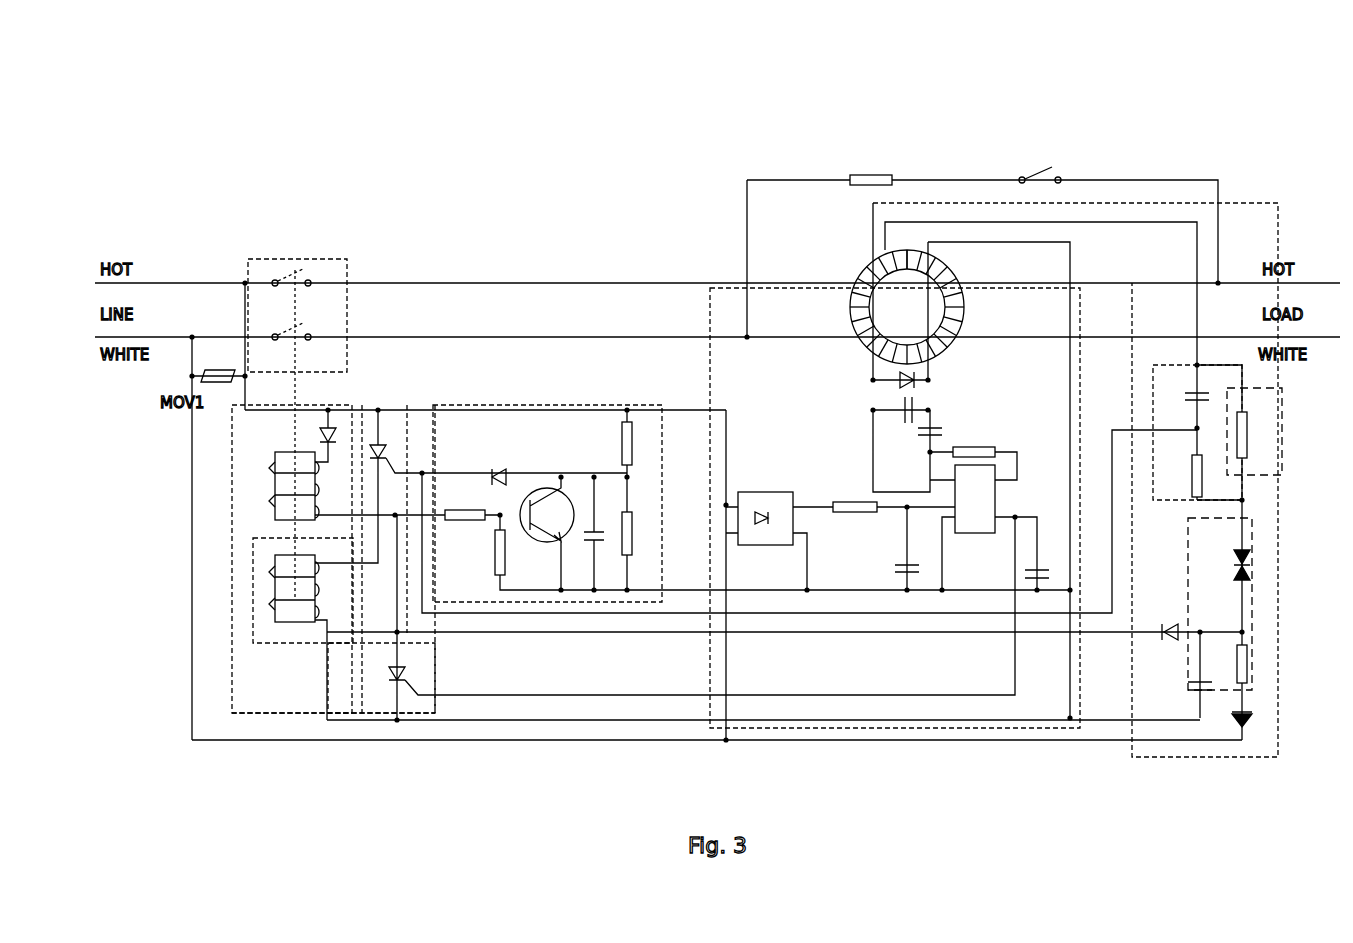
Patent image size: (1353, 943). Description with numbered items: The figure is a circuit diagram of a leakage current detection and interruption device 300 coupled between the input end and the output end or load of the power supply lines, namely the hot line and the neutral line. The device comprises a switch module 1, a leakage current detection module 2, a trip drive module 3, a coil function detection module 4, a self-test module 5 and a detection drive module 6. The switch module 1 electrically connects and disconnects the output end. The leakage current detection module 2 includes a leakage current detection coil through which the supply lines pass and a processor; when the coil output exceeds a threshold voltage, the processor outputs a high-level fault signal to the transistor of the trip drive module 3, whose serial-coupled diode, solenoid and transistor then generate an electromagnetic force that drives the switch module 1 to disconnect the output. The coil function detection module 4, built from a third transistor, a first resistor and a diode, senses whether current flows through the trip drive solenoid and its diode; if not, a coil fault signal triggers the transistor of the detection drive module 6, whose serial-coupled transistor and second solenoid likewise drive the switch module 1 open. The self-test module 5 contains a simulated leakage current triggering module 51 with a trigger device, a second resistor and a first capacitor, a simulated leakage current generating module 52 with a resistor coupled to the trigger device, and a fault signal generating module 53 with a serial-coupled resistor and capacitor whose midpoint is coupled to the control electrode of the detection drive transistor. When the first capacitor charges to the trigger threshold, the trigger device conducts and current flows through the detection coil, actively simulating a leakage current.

The leakage current detection and interruption device 300 is at (1352, 76).
The switch module 1 is at (335, 258).
The leakage current detection module 2 is at (765, 290).
The trip drive module 3 is at (332, 408).
The coil function detection module 4 is at (617, 406).
The self-test module 5 is at (1099, 461).
The detection drive module 6 is at (387, 408).
The simulated leakage current triggering module 51 is at (1252, 548).
The simulated leakage current generating module 52 is at (1282, 410).
The fault signal generating module 53 is at (1177, 368).